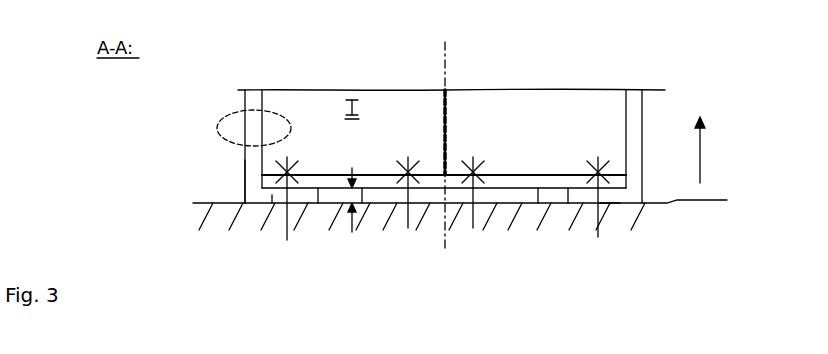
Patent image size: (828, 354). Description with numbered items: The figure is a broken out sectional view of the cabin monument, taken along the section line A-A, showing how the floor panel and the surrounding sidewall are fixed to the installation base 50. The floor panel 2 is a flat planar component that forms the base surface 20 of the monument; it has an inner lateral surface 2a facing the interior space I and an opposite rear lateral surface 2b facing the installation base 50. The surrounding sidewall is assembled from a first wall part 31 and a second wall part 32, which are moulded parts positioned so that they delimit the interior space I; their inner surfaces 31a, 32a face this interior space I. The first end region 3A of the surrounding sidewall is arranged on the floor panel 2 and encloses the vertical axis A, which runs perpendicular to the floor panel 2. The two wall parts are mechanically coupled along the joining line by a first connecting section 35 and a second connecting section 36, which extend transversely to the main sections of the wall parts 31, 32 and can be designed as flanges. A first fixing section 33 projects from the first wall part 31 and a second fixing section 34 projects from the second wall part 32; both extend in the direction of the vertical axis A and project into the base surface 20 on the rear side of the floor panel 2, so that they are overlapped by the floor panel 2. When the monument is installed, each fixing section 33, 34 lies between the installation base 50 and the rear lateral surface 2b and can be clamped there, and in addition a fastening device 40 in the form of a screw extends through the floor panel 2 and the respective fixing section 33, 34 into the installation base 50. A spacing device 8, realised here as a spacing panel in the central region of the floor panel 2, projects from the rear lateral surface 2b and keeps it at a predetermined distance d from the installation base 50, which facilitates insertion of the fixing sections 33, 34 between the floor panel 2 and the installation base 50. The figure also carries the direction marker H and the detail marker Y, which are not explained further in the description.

The floor panel 2 is at (341, 190).
The inner lateral surface 2a is at (514, 174).
The rear lateral surface 2b is at (544, 192).
The first end region 3A is at (232, 190).
The spacing device 8 is at (353, 233).
The base surface 20 is at (320, 175).
The first wall part 31 is at (216, 125).
The inner surface 31a is at (262, 101).
The second wall part 32 is at (639, 125).
The inner surface 32a is at (620, 124).
The first fixing section 33 is at (272, 205).
The second fixing section 34 is at (610, 205).
The first connecting section 35 is at (401, 111).
The second connecting section 36 is at (444, 112).
The fastening device 40 is at (287, 240).
The installation base 50 is at (477, 201).
The distance d is at (353, 168).
The vertical axis A is at (452, 52).
The height direction H is at (700, 150).
The interior space I is at (352, 109).
The detail Y is at (218, 128).